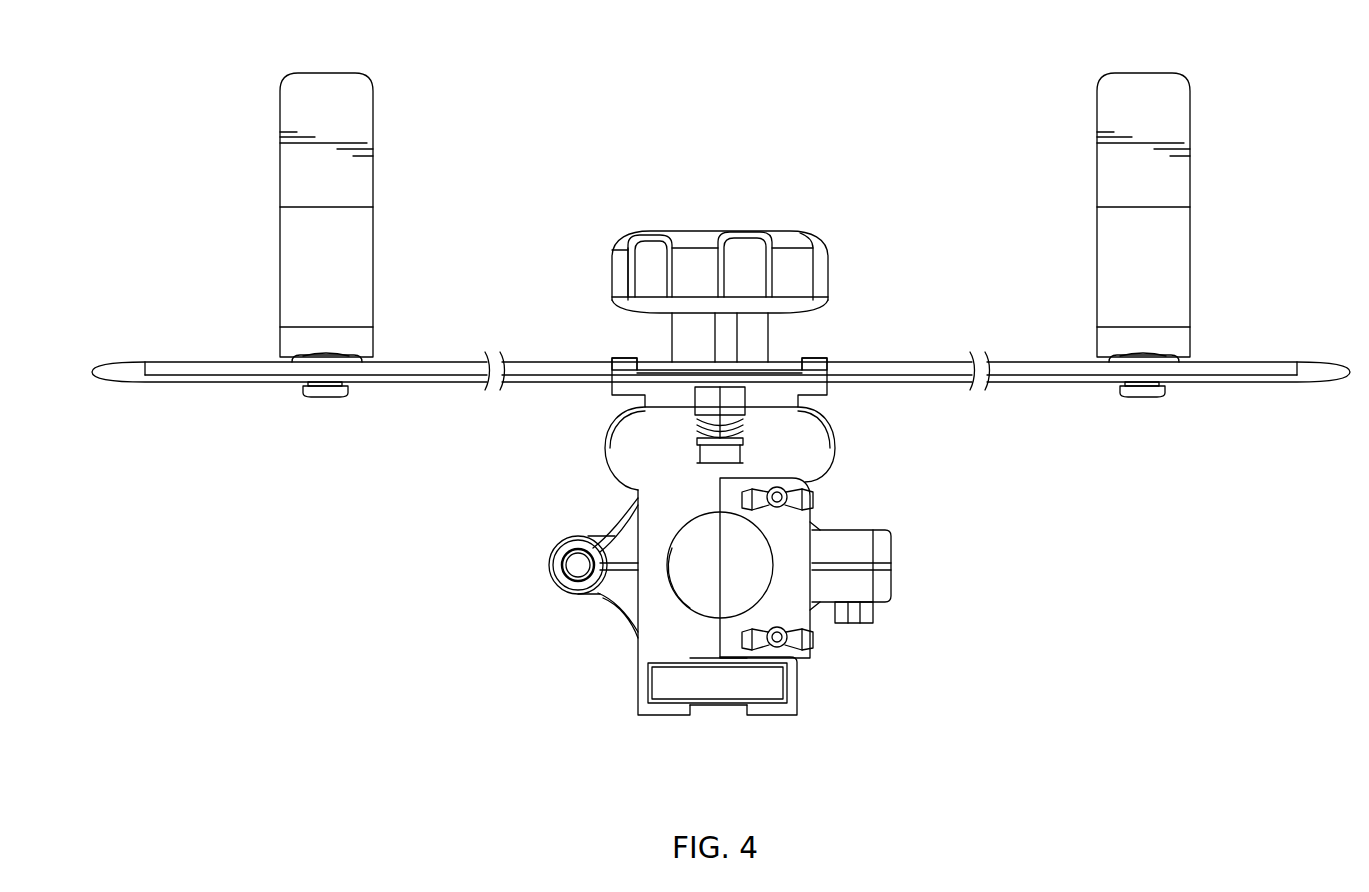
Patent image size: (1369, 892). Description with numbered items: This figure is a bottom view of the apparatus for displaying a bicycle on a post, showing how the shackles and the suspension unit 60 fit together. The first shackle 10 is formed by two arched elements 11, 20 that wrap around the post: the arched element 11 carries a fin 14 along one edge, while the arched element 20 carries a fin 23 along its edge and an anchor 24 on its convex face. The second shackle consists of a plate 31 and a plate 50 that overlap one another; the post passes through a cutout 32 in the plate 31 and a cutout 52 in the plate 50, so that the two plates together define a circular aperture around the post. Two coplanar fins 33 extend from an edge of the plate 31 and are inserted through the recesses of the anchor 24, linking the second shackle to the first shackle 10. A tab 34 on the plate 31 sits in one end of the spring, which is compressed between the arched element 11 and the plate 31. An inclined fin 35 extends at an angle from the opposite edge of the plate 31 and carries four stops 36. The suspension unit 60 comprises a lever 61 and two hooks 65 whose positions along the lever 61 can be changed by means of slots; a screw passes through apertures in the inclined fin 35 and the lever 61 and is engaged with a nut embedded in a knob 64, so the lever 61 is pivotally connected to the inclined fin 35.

The first shackle 10 is at (477, 585).
The arched element 11 is at (633, 547).
The fin 14 is at (880, 552).
The arched element 20 is at (621, 588).
The fin 23 is at (880, 585).
The anchor 24 is at (722, 687).
The plate 31 is at (812, 452).
The cutout 32 is at (683, 563).
The coplanar fins 33 is at (790, 705).
The tab 34 is at (725, 443).
The inclined fin 35 is at (660, 388).
The stops 36 is at (625, 370).
The plate 50 is at (797, 553).
The cutout 52 is at (752, 522).
The suspension unit 60 is at (997, 222).
The lever 61 is at (1068, 368).
The knob 64 is at (704, 270).
The hooks 65 is at (1103, 288).